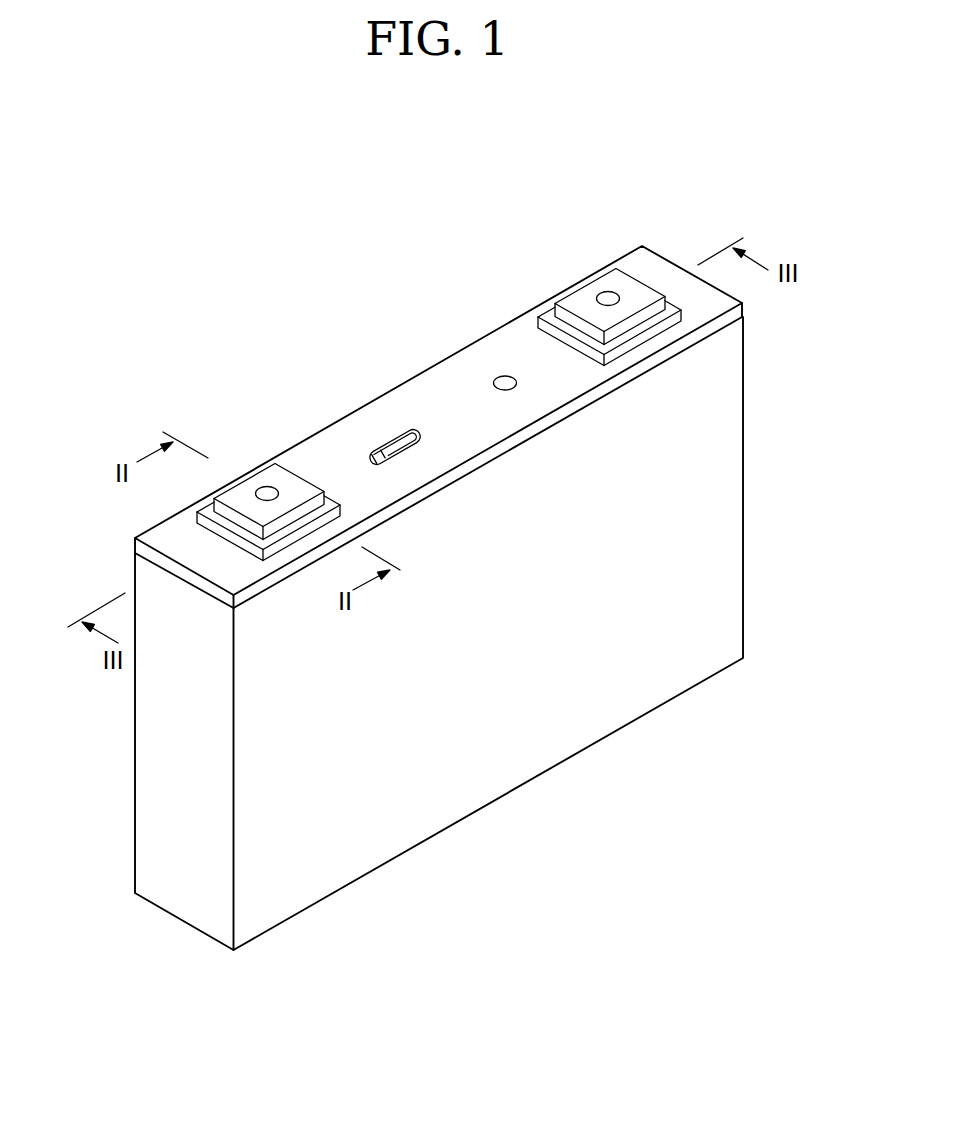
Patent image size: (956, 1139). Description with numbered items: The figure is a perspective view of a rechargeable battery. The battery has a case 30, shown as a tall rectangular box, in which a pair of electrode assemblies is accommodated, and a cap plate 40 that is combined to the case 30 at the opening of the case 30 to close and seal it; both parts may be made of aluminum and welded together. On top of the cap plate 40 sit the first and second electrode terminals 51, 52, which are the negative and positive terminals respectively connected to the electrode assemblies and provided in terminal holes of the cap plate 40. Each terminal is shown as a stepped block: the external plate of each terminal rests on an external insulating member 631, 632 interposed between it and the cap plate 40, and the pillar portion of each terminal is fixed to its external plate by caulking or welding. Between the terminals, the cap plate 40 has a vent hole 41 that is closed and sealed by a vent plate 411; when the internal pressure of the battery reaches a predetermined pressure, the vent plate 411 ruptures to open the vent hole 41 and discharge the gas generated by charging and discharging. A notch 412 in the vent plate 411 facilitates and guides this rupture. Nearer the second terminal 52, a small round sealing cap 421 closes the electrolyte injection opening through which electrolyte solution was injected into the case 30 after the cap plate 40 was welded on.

The case 30 is at (750, 528).
The cap plate 40 is at (443, 395).
The vent hole 41 is at (375, 448).
The vent plate 411 is at (383, 450).
The notch 412 is at (386, 440).
The sealing cap 421 is at (503, 376).
The first electrode terminal 51 is at (253, 473).
The second electrode terminal 52 is at (590, 277).
The external insulating member 631 is at (208, 523).
The external insulating member 632 is at (548, 326).